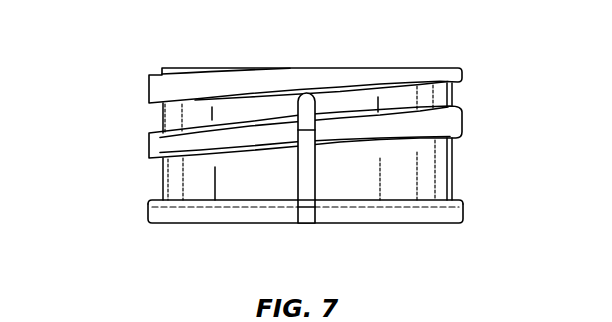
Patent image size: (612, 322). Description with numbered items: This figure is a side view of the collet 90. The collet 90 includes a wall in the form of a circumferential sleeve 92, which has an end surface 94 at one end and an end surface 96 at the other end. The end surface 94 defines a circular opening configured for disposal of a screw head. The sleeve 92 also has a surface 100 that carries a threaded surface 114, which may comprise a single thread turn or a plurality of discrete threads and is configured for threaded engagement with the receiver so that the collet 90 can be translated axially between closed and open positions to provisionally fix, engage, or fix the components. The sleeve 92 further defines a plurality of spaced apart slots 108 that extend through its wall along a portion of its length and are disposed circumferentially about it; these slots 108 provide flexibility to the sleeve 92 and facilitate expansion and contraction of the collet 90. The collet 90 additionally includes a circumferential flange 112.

The collet 90 is at (84, 55).
The circumferential sleeve 92 is at (430, 160).
The end surface 94 is at (407, 68).
The end surface 96 is at (413, 225).
The surface 100 is at (437, 173).
The slots 108 is at (303, 177).
The circumferential flange 112 is at (147, 200).
The threaded surface 114 is at (157, 135).